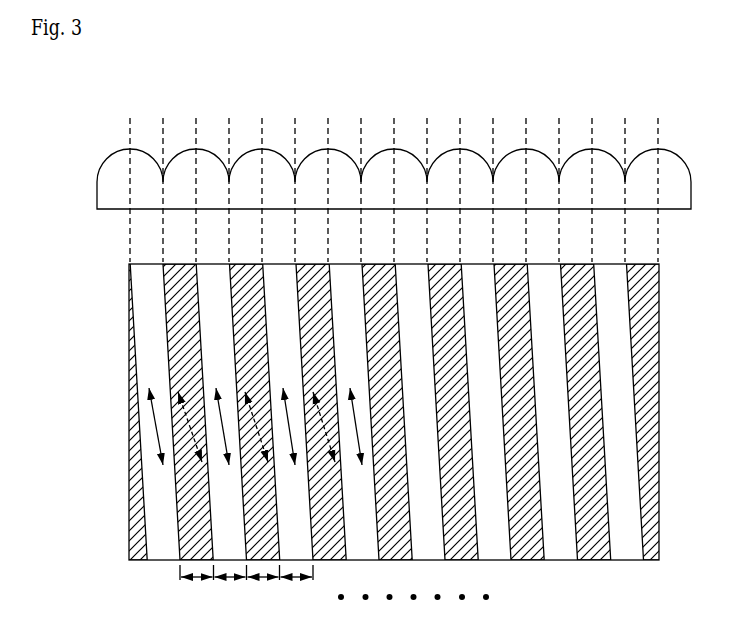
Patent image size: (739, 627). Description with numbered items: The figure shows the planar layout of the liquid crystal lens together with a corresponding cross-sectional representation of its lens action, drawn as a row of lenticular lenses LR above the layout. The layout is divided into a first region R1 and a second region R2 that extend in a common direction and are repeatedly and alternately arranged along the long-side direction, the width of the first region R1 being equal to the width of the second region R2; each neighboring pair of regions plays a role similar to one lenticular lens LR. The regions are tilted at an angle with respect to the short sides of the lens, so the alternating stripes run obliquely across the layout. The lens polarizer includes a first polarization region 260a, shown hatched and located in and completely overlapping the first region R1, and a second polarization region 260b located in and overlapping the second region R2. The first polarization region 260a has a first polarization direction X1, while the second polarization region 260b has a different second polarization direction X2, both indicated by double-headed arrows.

The lenticular lens LR is at (539, 151).
The first polarization region 260a is at (183, 352).
The second polarization region 260b is at (148, 302).
The first polarization direction X1 is at (190, 427).
The second polarization direction X2 is at (157, 424).
The first region R1 is at (230, 587).
The second region R2 is at (264, 587).